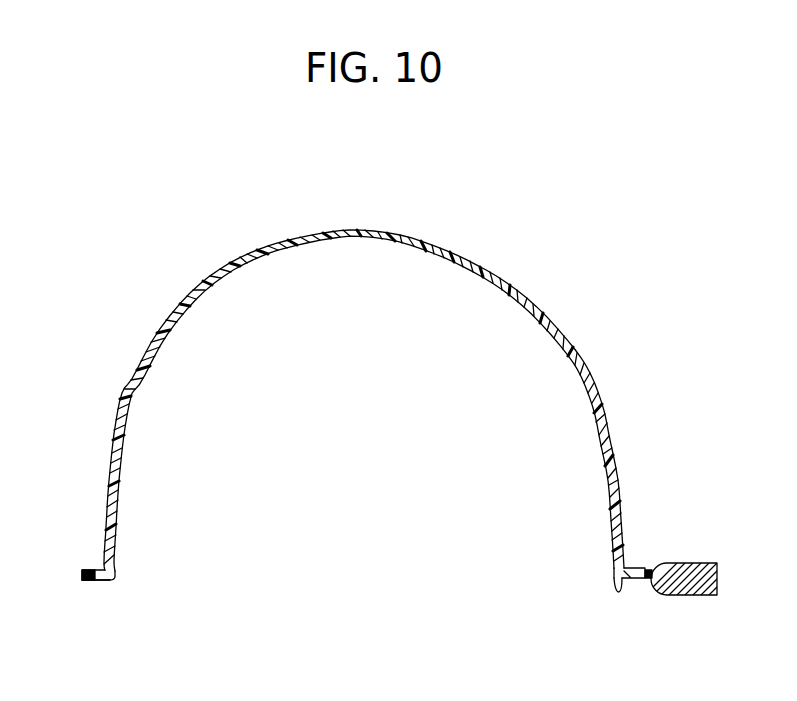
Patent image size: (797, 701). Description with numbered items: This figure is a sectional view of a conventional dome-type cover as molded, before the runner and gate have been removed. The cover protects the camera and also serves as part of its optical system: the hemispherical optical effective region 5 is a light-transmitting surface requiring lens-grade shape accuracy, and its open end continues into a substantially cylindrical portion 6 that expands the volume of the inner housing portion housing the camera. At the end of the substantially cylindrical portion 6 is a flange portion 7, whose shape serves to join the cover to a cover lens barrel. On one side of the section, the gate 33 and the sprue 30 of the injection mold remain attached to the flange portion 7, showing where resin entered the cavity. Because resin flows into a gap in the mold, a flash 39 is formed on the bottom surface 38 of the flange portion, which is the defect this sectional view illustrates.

The hemispherical optical effective region 5 is at (553, 323).
The substantially cylindrical portion 6 is at (623, 523).
The flange portion 7 is at (95, 569).
The sprue 30 is at (696, 596).
The gate 33 is at (648, 580).
The bottom surface of the flange portion 38 is at (89, 582).
The flash 39 is at (613, 583).